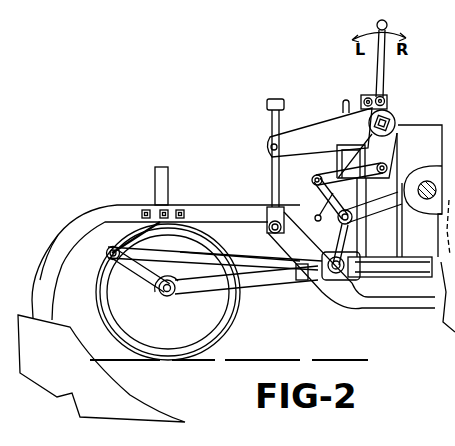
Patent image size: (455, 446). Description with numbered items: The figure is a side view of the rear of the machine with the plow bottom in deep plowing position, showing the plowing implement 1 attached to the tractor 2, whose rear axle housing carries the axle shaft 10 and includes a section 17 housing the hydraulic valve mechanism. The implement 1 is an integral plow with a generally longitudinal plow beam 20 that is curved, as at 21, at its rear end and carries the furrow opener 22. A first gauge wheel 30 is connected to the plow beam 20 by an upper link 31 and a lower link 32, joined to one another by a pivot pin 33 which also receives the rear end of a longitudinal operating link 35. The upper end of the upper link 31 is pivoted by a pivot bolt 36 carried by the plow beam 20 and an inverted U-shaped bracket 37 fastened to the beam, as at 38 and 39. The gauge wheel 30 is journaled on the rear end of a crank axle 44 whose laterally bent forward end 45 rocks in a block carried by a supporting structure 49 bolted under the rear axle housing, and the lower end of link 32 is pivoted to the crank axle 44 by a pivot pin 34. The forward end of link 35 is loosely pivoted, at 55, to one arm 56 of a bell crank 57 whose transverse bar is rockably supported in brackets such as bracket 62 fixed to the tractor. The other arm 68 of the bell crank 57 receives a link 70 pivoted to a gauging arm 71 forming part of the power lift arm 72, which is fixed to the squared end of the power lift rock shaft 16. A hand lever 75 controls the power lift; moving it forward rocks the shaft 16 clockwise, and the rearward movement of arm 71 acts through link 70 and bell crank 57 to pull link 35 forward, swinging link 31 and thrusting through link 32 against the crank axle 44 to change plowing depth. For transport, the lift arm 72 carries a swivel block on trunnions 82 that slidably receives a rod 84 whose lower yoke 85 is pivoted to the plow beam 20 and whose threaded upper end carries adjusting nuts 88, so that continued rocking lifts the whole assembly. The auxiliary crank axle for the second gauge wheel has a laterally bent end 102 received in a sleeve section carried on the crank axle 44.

The plowing implement 1 is at (80, 189).
The tractor 2 is at (432, 117).
The axle shaft 10 is at (427, 213).
The power lift rock shaft 16 is at (389, 119).
The section 17 is at (354, 150).
The plow beam 20 is at (66, 222).
The curved portion 21 is at (63, 254).
The furrow opener 22 is at (46, 372).
The first gauge wheel 30 is at (214, 335).
The upper link 31 is at (137, 235).
The lower link 32 is at (141, 275).
The pivot pin 33 is at (113, 261).
The pivot pin 34 is at (157, 296).
The operating link 35 is at (254, 258).
The pivot bolt 36 is at (171, 214).
The inverted U-shaped bracket 37 is at (165, 157).
The fastening 38 is at (180, 219).
The fastening 39 is at (145, 209).
The crank axle 44 is at (258, 280).
The forward end 45 is at (351, 272).
The supporting structure 49 is at (406, 268).
The pivot 55 is at (333, 283).
The bell crank arm 56 is at (339, 235).
The bell crank 57 is at (324, 229).
The bracket 62 is at (372, 206).
The bell crank arm 68 is at (324, 199).
The link 70 is at (333, 176).
The gauging arm 71 is at (386, 155).
The power lift arm 72 is at (324, 133).
The hand lever 75 is at (385, 66).
The trunnions 82 is at (270, 146).
The rod 84 is at (273, 170).
The yoke 85 is at (266, 210).
The adjusting nuts 88 is at (268, 108).
The laterally bent end 102 is at (301, 281).